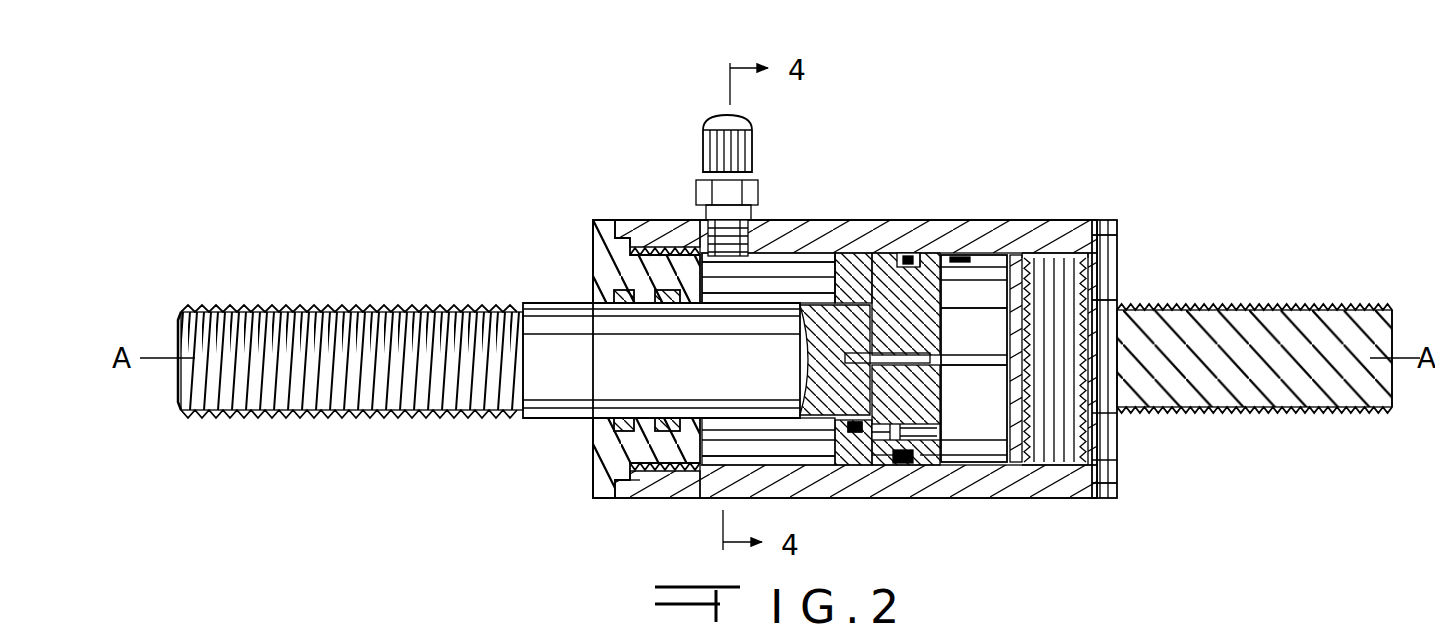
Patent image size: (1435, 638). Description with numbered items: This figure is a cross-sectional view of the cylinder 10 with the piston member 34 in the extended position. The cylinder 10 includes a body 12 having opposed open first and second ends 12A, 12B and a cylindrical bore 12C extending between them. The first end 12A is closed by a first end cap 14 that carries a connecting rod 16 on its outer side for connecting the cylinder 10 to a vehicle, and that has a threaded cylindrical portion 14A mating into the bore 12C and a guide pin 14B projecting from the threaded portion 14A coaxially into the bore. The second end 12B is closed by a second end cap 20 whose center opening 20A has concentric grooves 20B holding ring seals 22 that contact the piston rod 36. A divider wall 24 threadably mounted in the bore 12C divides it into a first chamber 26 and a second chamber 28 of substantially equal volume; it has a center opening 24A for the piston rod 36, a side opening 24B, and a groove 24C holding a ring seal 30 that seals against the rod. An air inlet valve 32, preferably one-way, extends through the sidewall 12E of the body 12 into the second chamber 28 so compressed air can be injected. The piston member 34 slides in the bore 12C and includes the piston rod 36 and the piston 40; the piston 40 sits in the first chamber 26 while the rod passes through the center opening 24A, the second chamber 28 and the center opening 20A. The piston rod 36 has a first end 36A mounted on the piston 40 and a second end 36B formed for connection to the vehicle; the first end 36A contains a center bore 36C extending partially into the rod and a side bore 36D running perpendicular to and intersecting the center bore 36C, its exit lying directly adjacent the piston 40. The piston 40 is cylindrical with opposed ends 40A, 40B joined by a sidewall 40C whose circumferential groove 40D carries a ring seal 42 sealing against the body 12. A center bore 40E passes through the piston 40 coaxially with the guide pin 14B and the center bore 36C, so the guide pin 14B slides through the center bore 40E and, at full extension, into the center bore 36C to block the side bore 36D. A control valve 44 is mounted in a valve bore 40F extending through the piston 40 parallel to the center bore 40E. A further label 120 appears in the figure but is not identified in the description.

The cylinder 10 is at (1042, 104).
The body 12 is at (1040, 492).
The first end 12A is at (1105, 500).
The second end 12B is at (640, 495).
The cylindrical bore 12C is at (960, 258).
The sidewall 12E is at (1013, 505).
The first end cap 14 is at (1112, 490).
The threaded cylindrical portion 14A is at (1052, 232).
The guide pin 14B is at (1092, 292).
The connecting rod 16 is at (1255, 412).
The second end cap 20 is at (632, 478).
The center opening 20A is at (594, 298).
The concentric grooves 20B is at (625, 455).
The ring seals 22 is at (628, 428).
The divider wall 24 is at (830, 292).
The center opening 24A is at (808, 268).
The side opening 24B is at (838, 470).
The groove 24C is at (856, 302).
The first chamber 26 is at (990, 265).
The second chamber 28 is at (755, 258).
The ring seal 30 is at (833, 280).
The air inlet valve 32 is at (704, 132).
The piston member 34 is at (650, 300).
The piston rod 36 is at (321, 424).
The first end 36A is at (793, 476).
The second end 36B is at (176, 424).
The center bore 36C is at (887, 359).
The side bore 36D is at (858, 342).
The piston 40 is at (974, 358).
The first end 40A is at (974, 384).
The second end 40B is at (880, 465).
The sidewall 40C is at (946, 465).
The groove 40D is at (910, 465).
The center bore 40E is at (974, 327).
The valve bore 40F is at (860, 434).
The ring seal 42 is at (905, 255).
The control valve 44 is at (912, 426).
The bore 120 is at (922, 255).